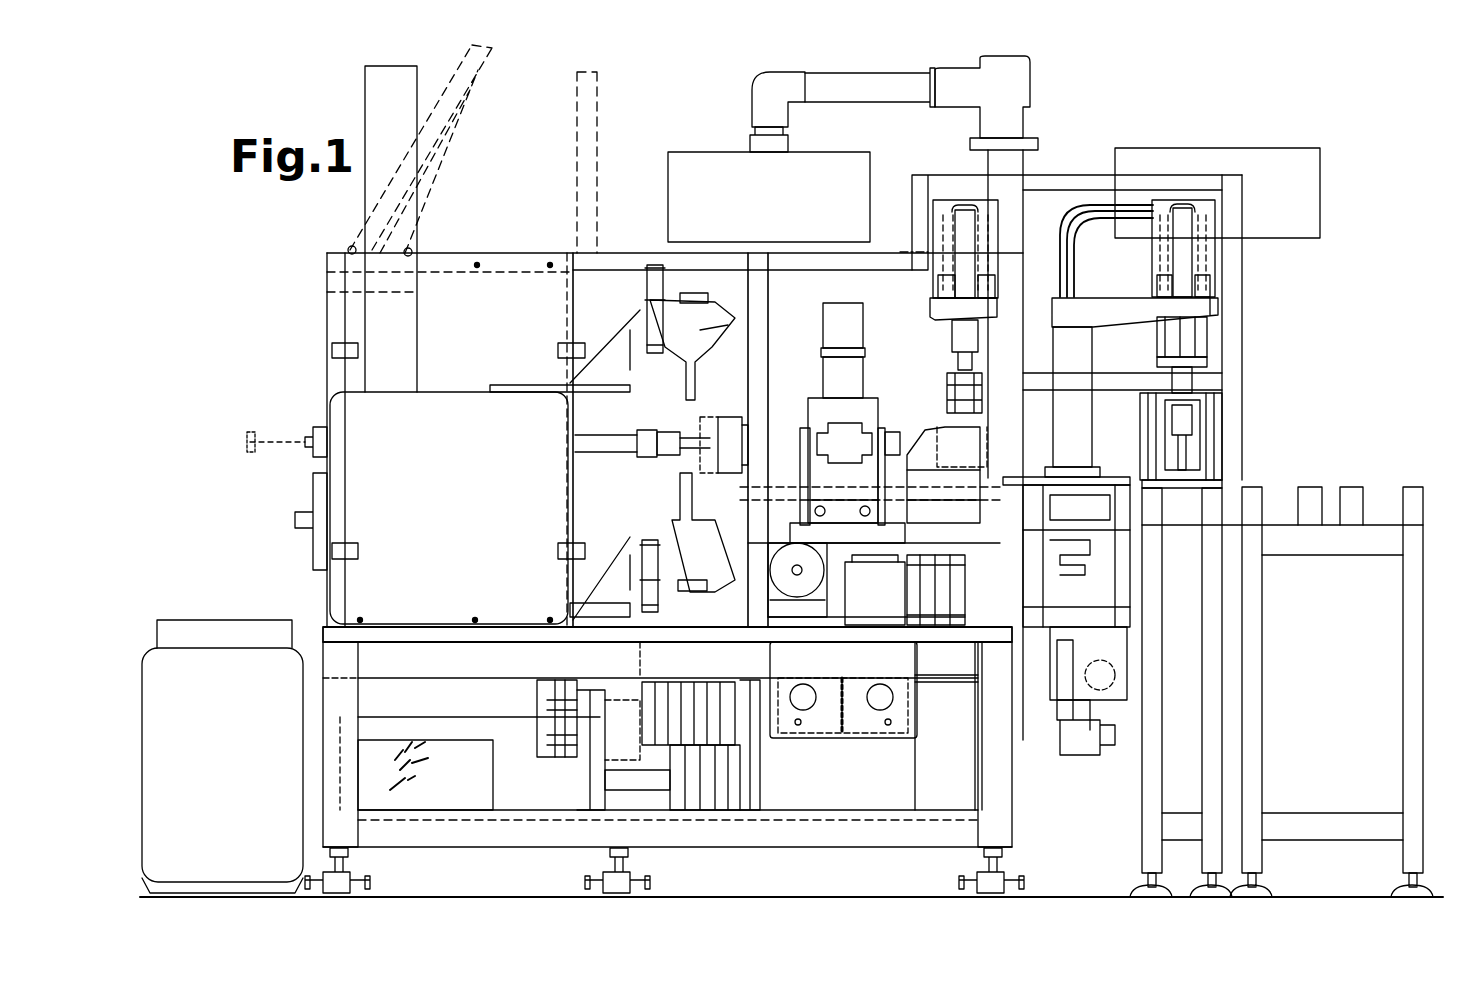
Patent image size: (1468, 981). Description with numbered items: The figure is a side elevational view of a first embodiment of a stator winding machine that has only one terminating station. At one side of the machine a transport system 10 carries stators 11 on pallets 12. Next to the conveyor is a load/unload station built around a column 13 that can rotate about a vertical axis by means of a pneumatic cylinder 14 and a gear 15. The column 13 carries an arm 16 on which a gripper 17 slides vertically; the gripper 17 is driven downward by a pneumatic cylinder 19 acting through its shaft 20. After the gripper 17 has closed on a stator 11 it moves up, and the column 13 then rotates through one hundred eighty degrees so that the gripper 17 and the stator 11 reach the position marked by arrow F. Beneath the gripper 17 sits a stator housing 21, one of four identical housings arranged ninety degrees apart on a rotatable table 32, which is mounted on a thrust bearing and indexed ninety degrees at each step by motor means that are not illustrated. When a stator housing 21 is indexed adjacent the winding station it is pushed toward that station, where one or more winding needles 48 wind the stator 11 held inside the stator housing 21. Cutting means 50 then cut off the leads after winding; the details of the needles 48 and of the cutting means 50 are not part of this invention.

The arrow F is at (1001, 182).
The transport system 10 is at (1212, 593).
The stator 11 is at (1220, 433).
The pallet 12 is at (1185, 487).
The column 13 is at (1068, 363).
The pneumatic cylinder 14 is at (1000, 485).
The gear 15 is at (1053, 545).
The arm 16 is at (1117, 308).
The gripper 17 is at (1185, 383).
The pneumatic cylinder 19 is at (1187, 237).
The shaft 20 is at (1185, 337).
The stator housing 21 is at (727, 423).
The rotatable table 32 is at (833, 530).
The winding needle 48 is at (695, 447).
The cutting means 50 is at (705, 322).